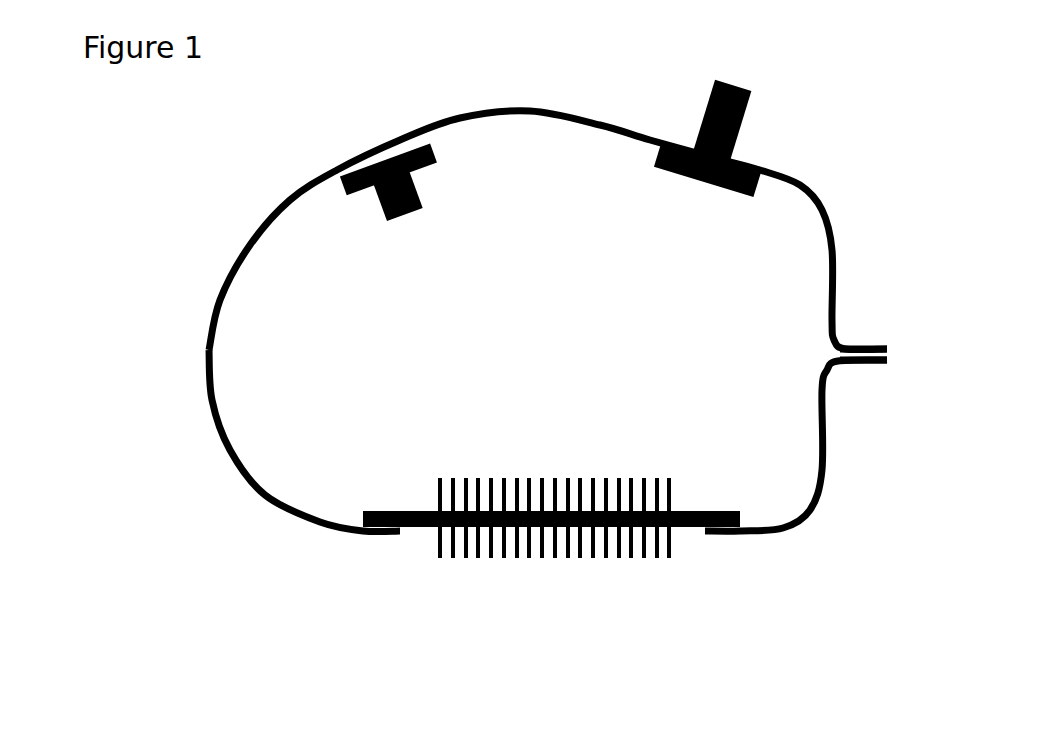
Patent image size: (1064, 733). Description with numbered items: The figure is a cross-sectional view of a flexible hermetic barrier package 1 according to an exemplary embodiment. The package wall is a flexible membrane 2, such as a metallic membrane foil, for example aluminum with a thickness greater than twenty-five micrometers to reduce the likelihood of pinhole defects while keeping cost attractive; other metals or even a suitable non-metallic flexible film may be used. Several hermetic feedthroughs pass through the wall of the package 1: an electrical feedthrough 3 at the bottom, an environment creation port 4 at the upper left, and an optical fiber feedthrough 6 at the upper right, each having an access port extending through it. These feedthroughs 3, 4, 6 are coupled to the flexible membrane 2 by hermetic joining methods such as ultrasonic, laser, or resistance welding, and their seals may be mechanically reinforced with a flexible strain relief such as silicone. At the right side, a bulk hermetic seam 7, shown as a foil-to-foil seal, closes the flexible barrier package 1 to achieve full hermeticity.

The flexible hermetic barrier package 1 is at (212, 311).
The flexible membrane 2 is at (220, 433).
The electrical feedthrough 3 is at (432, 523).
The environment creation port 4 is at (372, 163).
The optical fiber feedthrough 6 is at (747, 110).
The bulk hermetic seam 7 is at (877, 366).